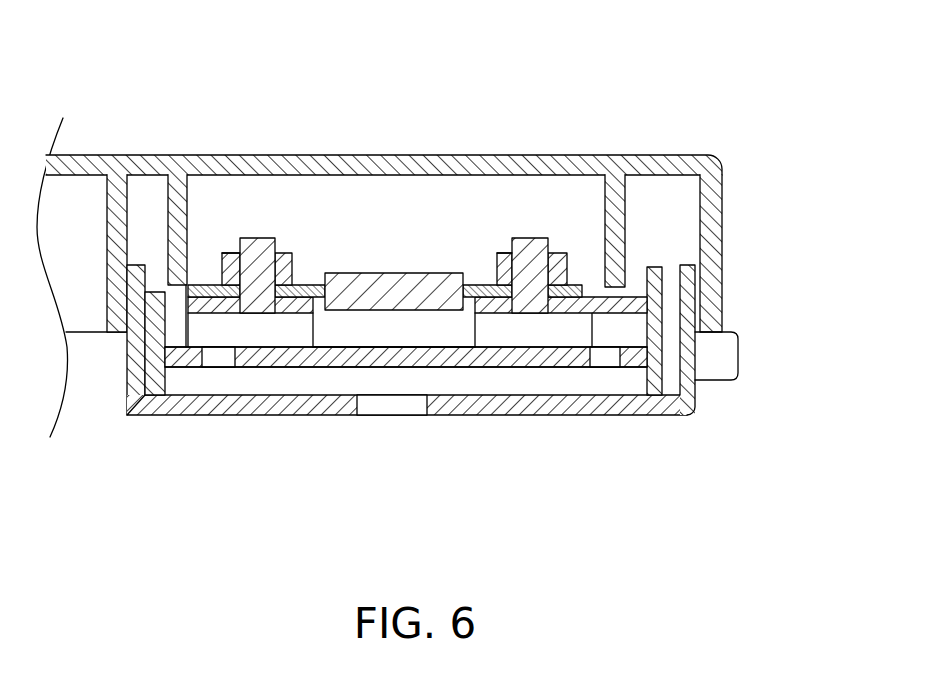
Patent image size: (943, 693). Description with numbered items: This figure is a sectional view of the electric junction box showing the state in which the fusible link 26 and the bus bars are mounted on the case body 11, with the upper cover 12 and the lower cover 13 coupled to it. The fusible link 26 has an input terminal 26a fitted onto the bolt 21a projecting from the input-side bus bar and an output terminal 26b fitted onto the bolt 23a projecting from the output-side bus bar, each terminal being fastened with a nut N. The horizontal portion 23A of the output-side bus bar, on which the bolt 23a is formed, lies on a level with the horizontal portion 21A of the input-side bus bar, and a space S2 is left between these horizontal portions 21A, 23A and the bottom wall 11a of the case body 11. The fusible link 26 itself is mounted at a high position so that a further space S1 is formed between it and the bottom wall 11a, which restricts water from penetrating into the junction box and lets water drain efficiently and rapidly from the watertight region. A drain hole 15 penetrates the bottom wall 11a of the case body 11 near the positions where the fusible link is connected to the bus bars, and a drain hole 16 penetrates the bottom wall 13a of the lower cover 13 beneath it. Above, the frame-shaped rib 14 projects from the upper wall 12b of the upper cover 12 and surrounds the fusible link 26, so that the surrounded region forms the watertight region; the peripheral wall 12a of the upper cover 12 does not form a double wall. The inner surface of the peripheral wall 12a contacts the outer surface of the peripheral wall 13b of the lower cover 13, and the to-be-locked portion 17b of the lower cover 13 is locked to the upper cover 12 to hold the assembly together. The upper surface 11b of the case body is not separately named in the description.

The case body 11 is at (492, 381).
The bottom wall of case body 11a is at (461, 370).
The upper surface of substrate 11b is at (705, 268).
The upper cover 12 is at (431, 200).
The peripheral wall of upper cover 12a is at (724, 203).
The upper wall of upper cover 12b is at (600, 155).
The lower cover 13 is at (467, 399).
The bottom wall of lower cover 13a is at (297, 400).
The peripheral wall of lower cover 13b is at (698, 386).
The rib 14 is at (172, 215).
The drain hole 15 is at (218, 358).
The drain hole 16 is at (390, 404).
The to-be-locked portion 17b is at (748, 352).
The horizontal portion of input-side bus bar 21A is at (205, 306).
The bolt 21a is at (252, 238).
The horizontal portion of output-side bus bar 23A is at (565, 308).
The bolt 23a is at (530, 237).
The fusible link 26 is at (385, 272).
The input terminal of fusible link 26a is at (300, 284).
The output terminal of fusible link 26b is at (472, 284).
The nut N is at (224, 250).
The space S1 is at (357, 332).
The space S2 is at (258, 332).